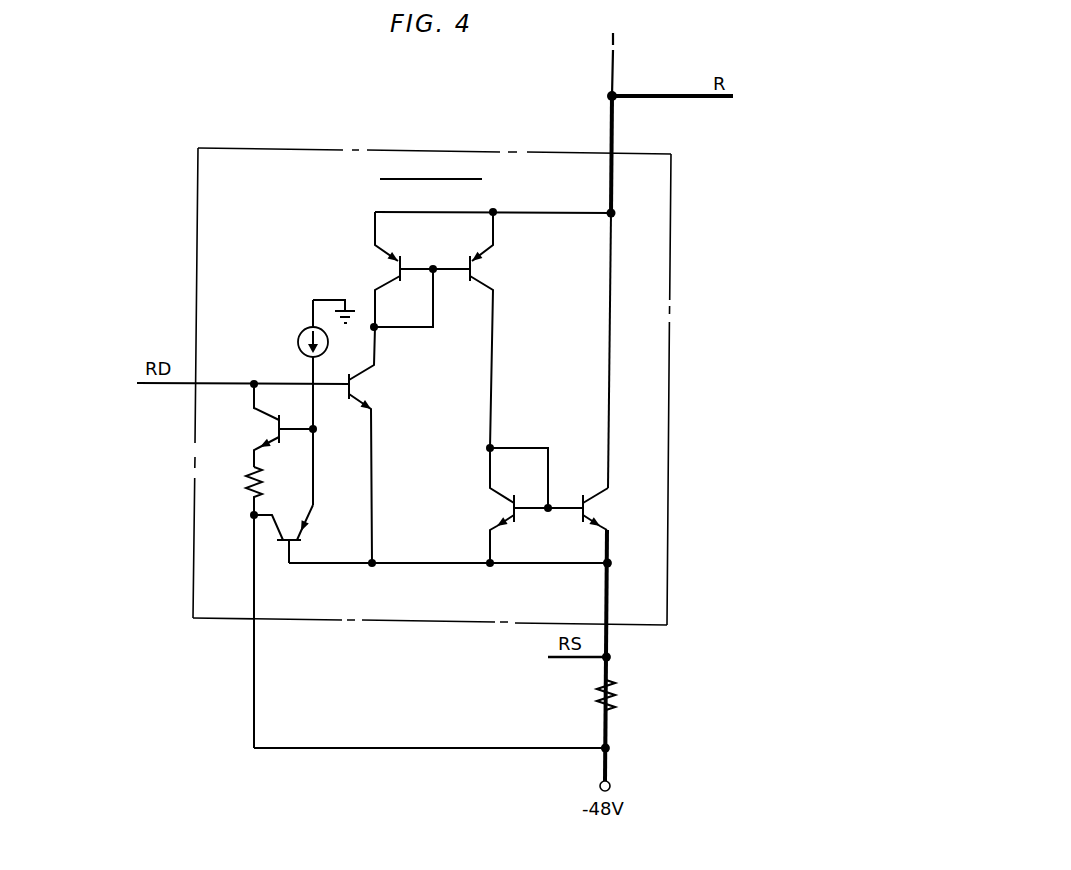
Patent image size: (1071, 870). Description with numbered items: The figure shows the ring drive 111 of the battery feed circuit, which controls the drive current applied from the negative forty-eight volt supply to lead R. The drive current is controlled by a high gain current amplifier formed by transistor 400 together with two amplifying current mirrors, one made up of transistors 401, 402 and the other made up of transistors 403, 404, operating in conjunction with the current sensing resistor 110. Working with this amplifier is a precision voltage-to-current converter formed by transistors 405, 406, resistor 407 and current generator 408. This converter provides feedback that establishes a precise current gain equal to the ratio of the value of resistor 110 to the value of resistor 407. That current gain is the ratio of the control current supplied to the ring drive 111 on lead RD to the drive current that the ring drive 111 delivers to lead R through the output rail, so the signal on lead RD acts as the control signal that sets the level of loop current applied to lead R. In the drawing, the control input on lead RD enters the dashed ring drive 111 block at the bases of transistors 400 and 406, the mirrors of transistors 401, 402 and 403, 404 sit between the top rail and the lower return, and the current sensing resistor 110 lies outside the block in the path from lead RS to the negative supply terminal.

The ring drive 111 is at (449, 127).
The transistor 400 is at (364, 385).
The transistor 401 is at (379, 269).
The transistor 402 is at (487, 269).
The transistor 403 is at (500, 509).
The transistor 404 is at (596, 509).
The transistor 405 is at (310, 533).
The transistor 406 is at (259, 430).
The resistor 407 is at (252, 487).
The current generator 408 is at (299, 340).
The current sensing resistor 110 is at (612, 699).